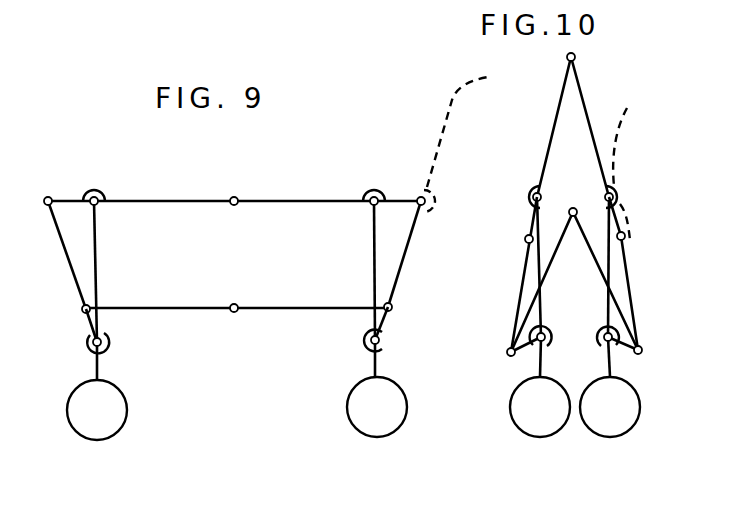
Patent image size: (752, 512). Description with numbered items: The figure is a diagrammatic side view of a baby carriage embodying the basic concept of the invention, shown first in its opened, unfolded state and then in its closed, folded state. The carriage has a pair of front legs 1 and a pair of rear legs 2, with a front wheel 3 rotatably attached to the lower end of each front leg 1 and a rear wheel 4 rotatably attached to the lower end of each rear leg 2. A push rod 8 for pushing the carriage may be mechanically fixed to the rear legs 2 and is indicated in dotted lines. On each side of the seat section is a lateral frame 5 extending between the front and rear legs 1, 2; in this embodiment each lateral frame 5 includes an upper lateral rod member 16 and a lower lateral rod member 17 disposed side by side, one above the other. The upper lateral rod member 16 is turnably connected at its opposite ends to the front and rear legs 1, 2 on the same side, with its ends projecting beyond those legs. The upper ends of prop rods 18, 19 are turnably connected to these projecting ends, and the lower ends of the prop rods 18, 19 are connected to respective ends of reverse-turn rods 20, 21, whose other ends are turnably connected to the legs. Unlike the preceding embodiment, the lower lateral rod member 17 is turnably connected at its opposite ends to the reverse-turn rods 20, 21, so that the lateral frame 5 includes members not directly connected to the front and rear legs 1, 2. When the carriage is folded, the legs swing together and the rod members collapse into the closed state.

In FIG. 9, the front leg 1 is at (99, 369).
In FIG. 10, the front leg 1 is at (538, 360).
In FIG. 9, the rear leg 2 is at (373, 362).
In FIG. 10, the rear leg 2 is at (612, 365).
In FIG. 9, the front wheel 3 is at (128, 410).
In FIG. 10, the front wheel 3 is at (510, 410).
In FIG. 9, the rear wheel 4 is at (347, 405).
In FIG. 10, the rear wheel 4 is at (640, 412).
In FIG. 9, the lateral frame 5 is at (234, 241).
In FIG. 10, the lateral frame 5 is at (568, 194).
In FIG. 9, the push rod 8 is at (448, 112).
In FIG. 10, the push rod 8 is at (617, 147).
In FIG. 9, the upper lateral rod member 16 is at (187, 200).
In FIG. 10, the upper lateral rod member 16 is at (560, 101).
In FIG. 9, the lower lateral rod member 17 is at (200, 311).
In FIG. 10, the lower lateral rod member 17 is at (550, 260).
In FIG. 9, the prop rod 18 is at (67, 259).
In FIG. 10, the prop rod 18 is at (519, 296).
In FIG. 9, the prop rod 19 is at (405, 259).
In FIG. 10, the prop rod 19 is at (630, 272).
In FIG. 9, the reverse-turn rod 20 is at (83, 322).
In FIG. 10, the reverse-turn rod 20 is at (518, 352).
In FIG. 9, the reverse-turn rod 21 is at (381, 332).
In FIG. 10, the reverse-turn rod 21 is at (627, 352).